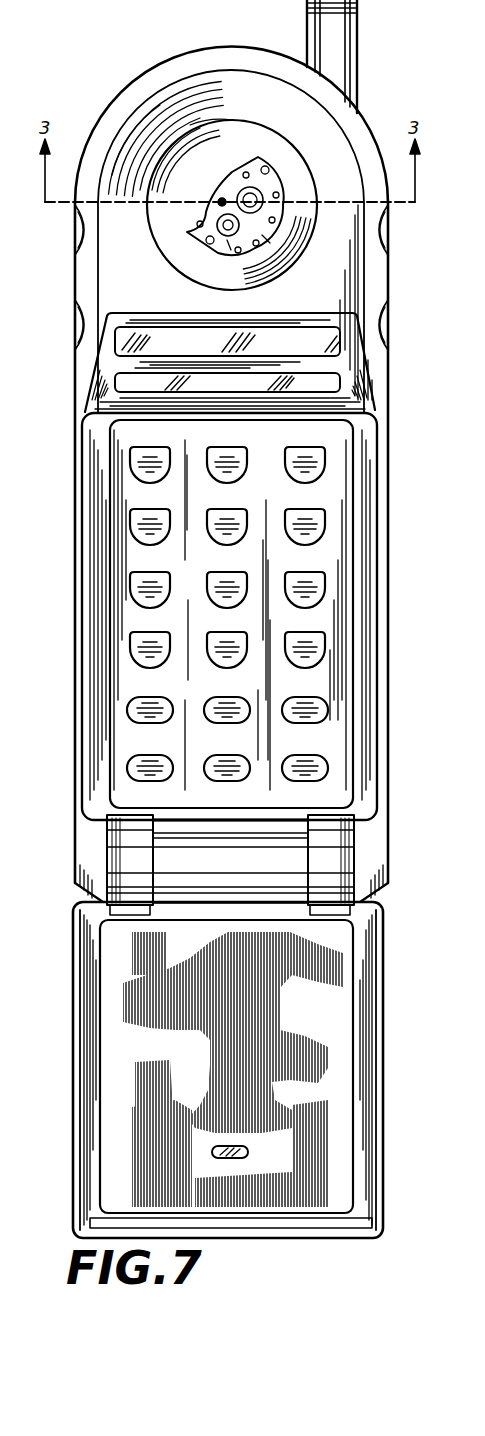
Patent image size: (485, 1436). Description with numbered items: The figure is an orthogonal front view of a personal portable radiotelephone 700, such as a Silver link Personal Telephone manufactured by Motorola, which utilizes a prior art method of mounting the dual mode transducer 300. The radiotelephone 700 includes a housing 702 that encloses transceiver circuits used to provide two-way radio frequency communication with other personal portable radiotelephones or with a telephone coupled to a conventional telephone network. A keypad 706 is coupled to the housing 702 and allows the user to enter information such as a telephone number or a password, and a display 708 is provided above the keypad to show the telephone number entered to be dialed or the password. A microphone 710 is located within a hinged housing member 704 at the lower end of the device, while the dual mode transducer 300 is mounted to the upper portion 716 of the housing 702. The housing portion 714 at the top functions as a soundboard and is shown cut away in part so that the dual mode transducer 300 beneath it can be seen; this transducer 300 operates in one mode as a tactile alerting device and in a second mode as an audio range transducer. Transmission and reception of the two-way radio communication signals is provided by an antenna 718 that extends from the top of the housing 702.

The personal portable radiotelephone 700 is at (432, 1240).
The housing 702 is at (388, 482).
The hinged housing member 704 is at (338, 938).
The keypad 706 is at (330, 613).
The display 708 is at (333, 332).
The microphone 710 is at (233, 1150).
The soundboard housing portion 714 is at (212, 182).
The upper portion of the housing 716 is at (345, 220).
The antenna 718 is at (357, 58).
The dual mode transducer 300 is at (262, 190).